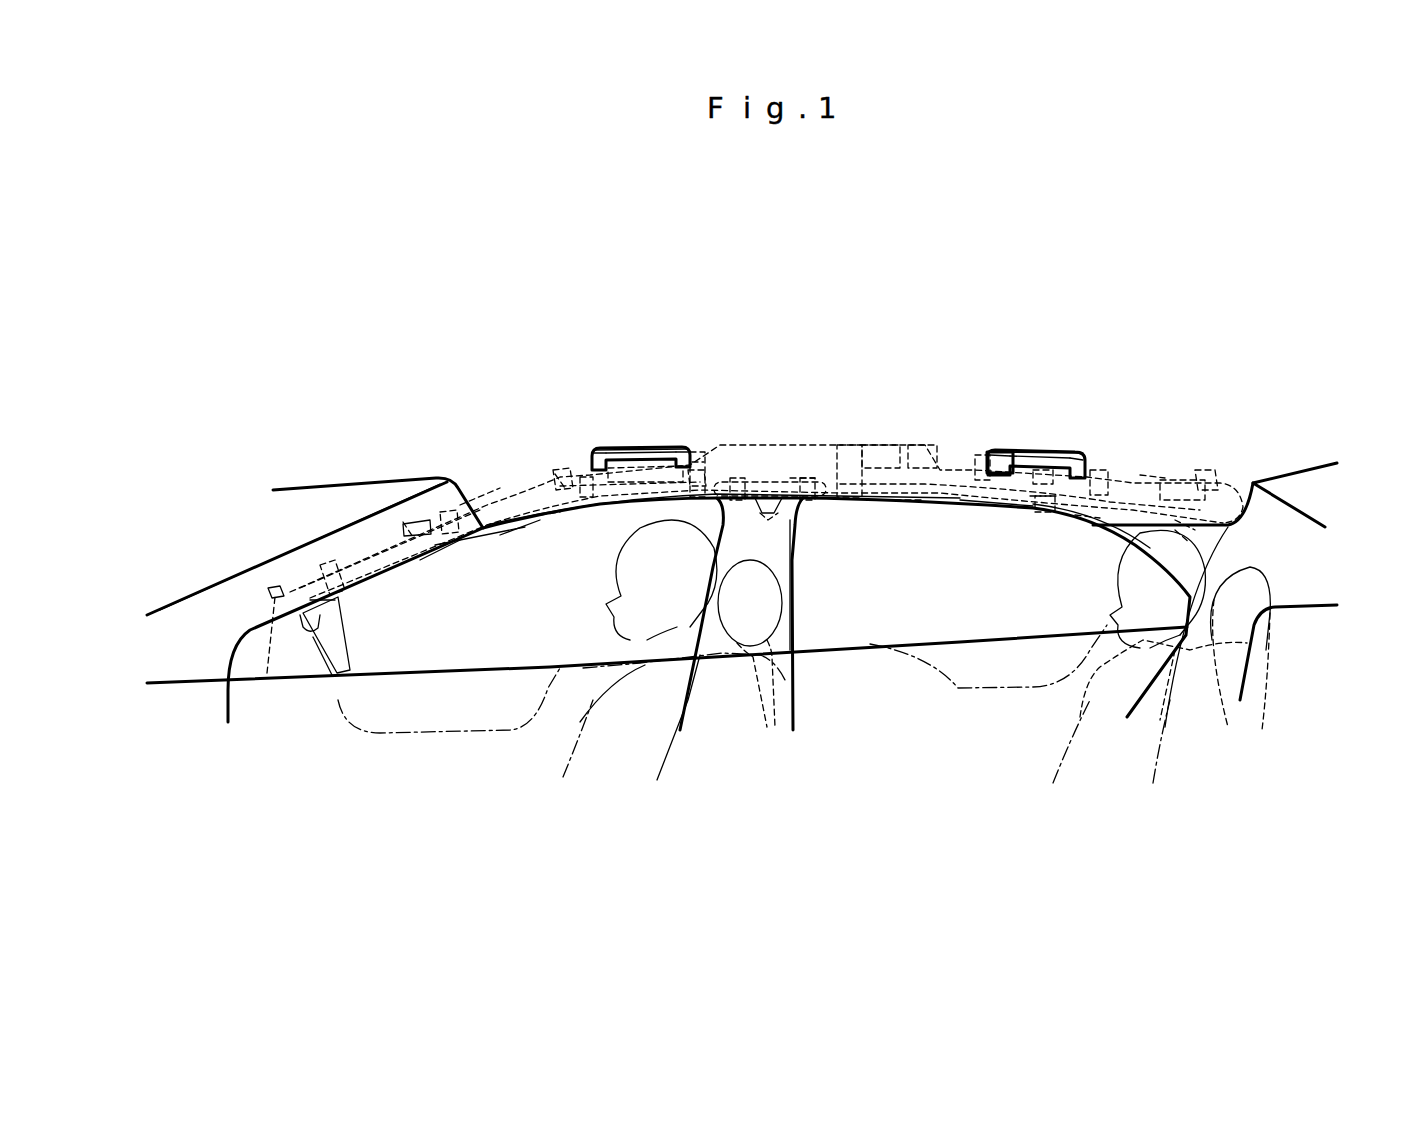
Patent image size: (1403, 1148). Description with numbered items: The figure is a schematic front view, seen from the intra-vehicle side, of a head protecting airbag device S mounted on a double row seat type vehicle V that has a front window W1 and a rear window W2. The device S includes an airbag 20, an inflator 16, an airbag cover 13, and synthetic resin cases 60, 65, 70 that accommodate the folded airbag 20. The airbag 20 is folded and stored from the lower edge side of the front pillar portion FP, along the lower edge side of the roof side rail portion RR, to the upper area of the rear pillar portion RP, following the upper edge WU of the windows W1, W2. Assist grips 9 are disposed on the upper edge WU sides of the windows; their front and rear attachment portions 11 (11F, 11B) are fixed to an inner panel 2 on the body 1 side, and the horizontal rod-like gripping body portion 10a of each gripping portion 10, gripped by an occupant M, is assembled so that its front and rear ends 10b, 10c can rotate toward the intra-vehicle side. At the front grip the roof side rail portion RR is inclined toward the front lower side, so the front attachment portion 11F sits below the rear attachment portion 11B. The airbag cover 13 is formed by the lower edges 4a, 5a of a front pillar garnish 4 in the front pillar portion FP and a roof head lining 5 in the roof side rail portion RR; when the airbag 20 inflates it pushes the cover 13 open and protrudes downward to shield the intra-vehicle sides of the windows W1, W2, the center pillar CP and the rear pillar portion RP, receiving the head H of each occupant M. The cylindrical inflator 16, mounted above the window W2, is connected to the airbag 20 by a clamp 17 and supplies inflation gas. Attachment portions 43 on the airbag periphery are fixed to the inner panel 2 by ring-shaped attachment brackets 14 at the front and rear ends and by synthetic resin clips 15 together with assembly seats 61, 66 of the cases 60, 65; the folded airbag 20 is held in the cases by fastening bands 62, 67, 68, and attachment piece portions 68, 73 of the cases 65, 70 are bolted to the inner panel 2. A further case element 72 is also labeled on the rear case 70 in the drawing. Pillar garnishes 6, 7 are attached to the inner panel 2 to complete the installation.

The body 1 is at (417, 397).
The inner panel 2 is at (390, 549).
The front pillar garnish 4 is at (294, 548).
The lower edge of front pillar garnish 4a is at (447, 553).
The roof head lining 5 is at (965, 470).
The lower edge of roof head lining 5a is at (518, 527).
The pillar garnish 6 is at (788, 700).
The pillar garnish 7 is at (1308, 593).
The assist grip 9 is at (838, 451).
The gripping portion 10 is at (735, 288).
The gripping body portion 10a is at (642, 455).
The front end of gripping body portion 10b is at (603, 455).
The rear end of gripping body portion 10c is at (677, 455).
The attachment portion of assist grip 11 is at (592, 468).
The front attachment portion 11F is at (988, 452).
The rear attachment portion 11B is at (1105, 455).
The airbag cover 13 is at (548, 618).
The attachment bracket 14 is at (752, 560).
The clip 15 is at (413, 518).
The inflator 16 is at (893, 492).
The clamp 17 is at (870, 478).
The airbag 20 is at (367, 560).
The attachment portion 43 is at (1260, 365).
The case 60 is at (493, 488).
The assembly seat 61 is at (446, 406).
The fastening band 62 is at (552, 517).
The case 65 is at (802, 478).
The assembly seat 66 is at (755, 353).
The fastening band 67 is at (908, 507).
The fastening band / attachment piece portion 68 is at (770, 512).
The case 70 is at (1100, 513).
The rear end portion 72 is at (1155, 475).
The attachment piece portion 73 is at (1185, 540).
The vehicle V is at (287, 330).
The head protecting airbag device S is at (1212, 345).
The roof side rail portion RR is at (485, 382).
The rear pillar portion RP is at (1310, 500).
The front pillar portion FP is at (250, 545).
The center pillar CP is at (808, 626).
The front window W1 is at (433, 660).
The rear window W2 is at (992, 633).
The upper edge of window WU is at (863, 505).
The head H is at (663, 593).
The occupant M is at (627, 745).